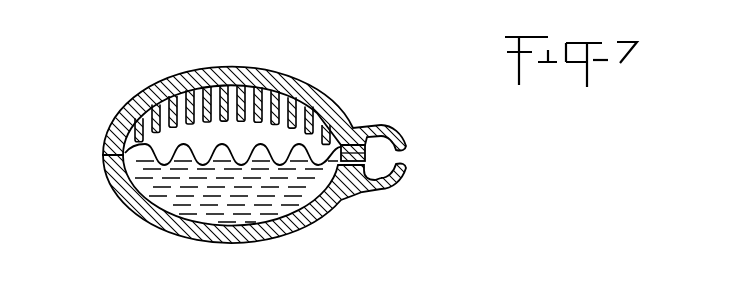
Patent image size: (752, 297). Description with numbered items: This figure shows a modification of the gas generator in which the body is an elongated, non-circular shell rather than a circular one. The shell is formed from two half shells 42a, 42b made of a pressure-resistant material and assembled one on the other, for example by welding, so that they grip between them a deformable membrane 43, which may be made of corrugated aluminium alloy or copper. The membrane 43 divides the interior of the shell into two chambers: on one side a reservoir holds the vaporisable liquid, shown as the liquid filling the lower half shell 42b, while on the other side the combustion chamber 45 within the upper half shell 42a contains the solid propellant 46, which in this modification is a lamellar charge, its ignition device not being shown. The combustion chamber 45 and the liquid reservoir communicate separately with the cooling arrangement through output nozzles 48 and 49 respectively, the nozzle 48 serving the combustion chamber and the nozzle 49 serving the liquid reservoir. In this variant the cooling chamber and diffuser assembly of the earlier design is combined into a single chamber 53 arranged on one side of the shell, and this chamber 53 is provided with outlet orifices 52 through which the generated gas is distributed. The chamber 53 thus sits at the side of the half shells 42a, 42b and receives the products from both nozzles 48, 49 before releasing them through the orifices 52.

The half shell 42a is at (284, 82).
The half shell 42b is at (153, 205).
The deformable membrane 43 is at (273, 147).
The combustion chamber 45 is at (140, 142).
The solid propellant 46 is at (215, 92).
The output nozzle 48 is at (360, 142).
The output nozzle 49 is at (356, 166).
The outlet orifices 52 is at (406, 158).
The single chamber 53 is at (384, 144).